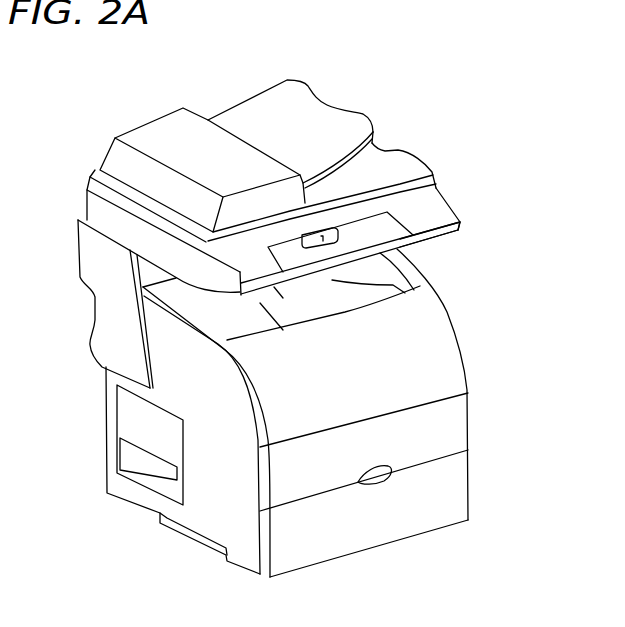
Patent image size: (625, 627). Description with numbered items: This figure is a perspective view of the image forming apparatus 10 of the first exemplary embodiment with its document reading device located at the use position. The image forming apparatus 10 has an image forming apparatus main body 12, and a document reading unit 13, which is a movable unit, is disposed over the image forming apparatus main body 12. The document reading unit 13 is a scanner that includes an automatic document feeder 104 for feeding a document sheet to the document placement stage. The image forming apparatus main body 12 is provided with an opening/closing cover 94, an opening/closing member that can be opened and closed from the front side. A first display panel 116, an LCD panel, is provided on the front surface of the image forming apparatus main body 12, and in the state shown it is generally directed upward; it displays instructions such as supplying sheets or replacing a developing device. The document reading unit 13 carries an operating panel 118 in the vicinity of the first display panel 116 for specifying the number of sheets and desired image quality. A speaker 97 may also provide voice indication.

The image forming apparatus 10 is at (532, 233).
The image forming apparatus main body 12 is at (105, 409).
The document reading unit 13 is at (422, 159).
The opening/closing cover 94 is at (460, 377).
The speaker 97 is at (128, 465).
The automatic document feeder 104 is at (145, 125).
The first display panel 116 is at (337, 238).
The operating panel 118 is at (438, 233).